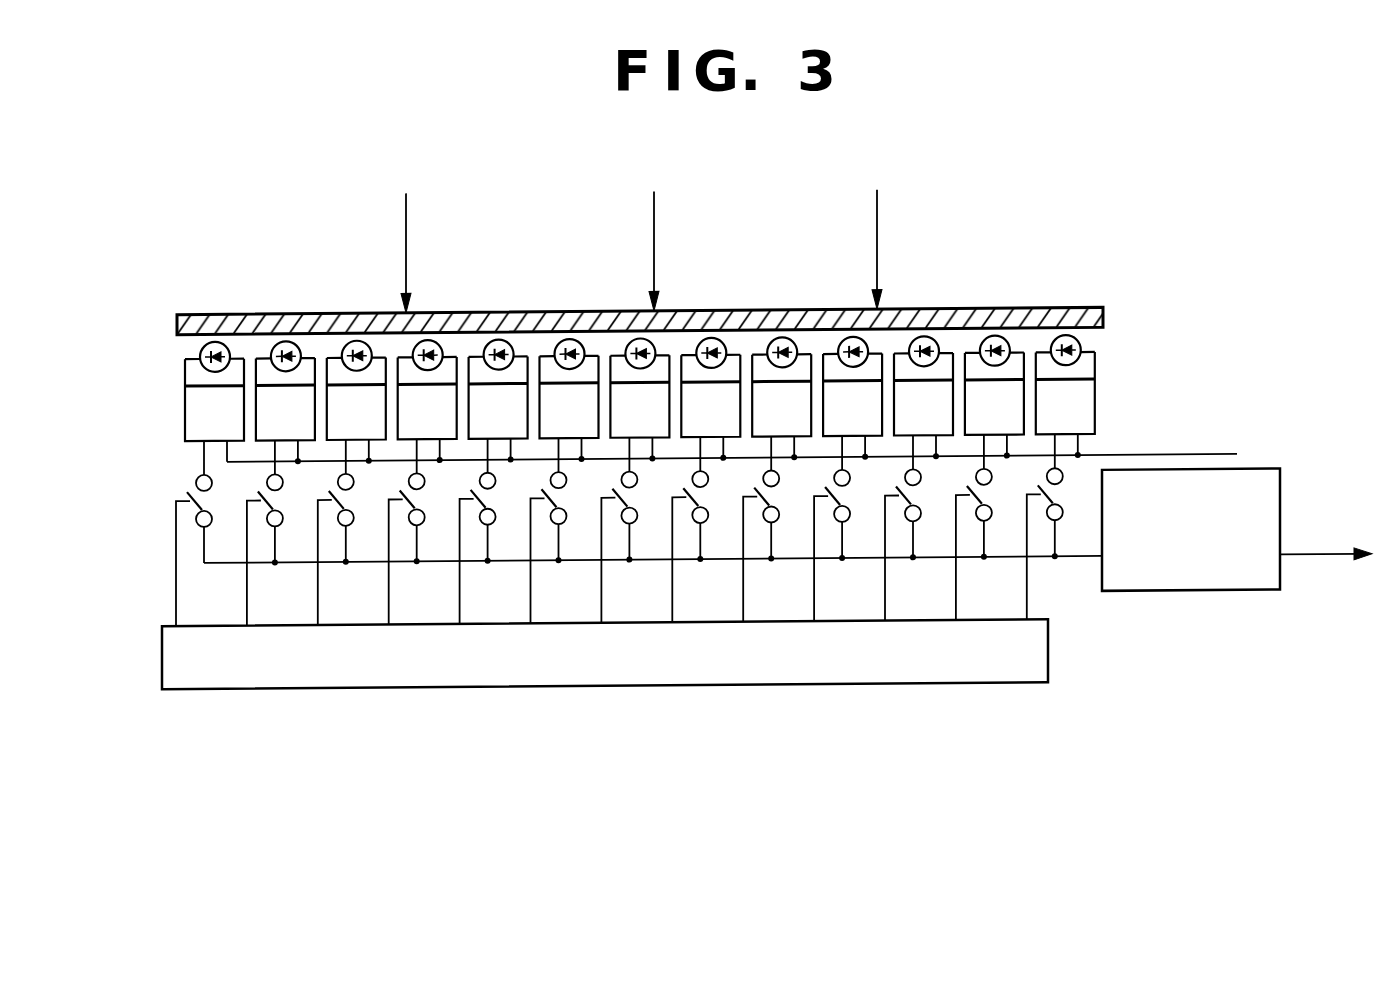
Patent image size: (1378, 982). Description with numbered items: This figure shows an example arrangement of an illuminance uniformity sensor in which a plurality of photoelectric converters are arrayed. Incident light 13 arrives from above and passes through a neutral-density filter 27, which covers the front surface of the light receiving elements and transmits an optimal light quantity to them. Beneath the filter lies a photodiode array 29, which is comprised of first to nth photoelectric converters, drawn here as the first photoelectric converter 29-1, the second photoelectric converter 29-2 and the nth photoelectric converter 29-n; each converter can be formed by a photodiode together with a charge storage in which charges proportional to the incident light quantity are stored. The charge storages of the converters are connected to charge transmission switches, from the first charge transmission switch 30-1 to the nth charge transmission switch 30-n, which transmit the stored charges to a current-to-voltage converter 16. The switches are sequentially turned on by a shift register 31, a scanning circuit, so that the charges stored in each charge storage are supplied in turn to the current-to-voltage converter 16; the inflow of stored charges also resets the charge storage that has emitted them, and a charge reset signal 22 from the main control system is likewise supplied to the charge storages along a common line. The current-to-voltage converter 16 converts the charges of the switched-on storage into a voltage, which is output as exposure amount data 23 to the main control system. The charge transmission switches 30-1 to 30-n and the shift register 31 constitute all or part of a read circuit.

The light beams 13 is at (877, 238).
The neutral-density filter 27 is at (1050, 314).
The photodiode array 29 is at (649, 367).
The first photoelectric converter 29-1 is at (185, 404).
The second photoelectric converter 29-2 is at (256, 413).
The nth photoelectric converter 29-n is at (1097, 377).
The first charge transmission switch 30-1 is at (176, 522).
The nth charge transmission switch 30-n is at (1027, 518).
The shift register 31 is at (710, 689).
The charge reset signal 22 is at (1218, 462).
The current-to-voltage converter 16 is at (1265, 477).
The exposure amount data 23 is at (1320, 563).